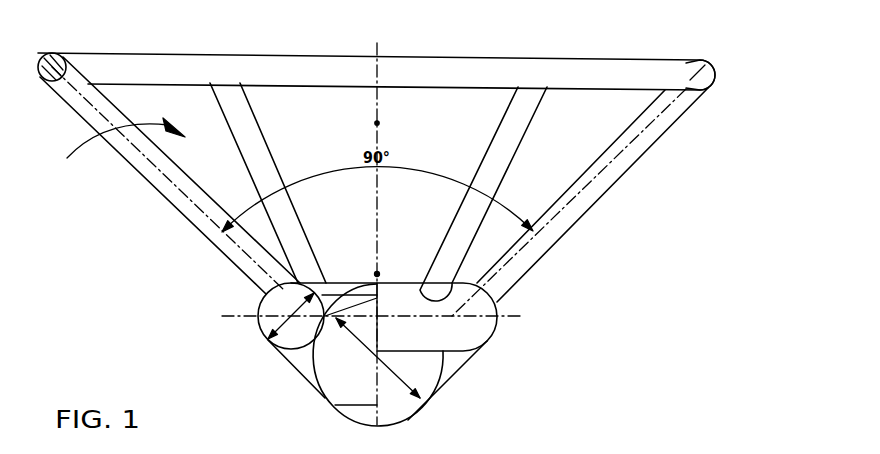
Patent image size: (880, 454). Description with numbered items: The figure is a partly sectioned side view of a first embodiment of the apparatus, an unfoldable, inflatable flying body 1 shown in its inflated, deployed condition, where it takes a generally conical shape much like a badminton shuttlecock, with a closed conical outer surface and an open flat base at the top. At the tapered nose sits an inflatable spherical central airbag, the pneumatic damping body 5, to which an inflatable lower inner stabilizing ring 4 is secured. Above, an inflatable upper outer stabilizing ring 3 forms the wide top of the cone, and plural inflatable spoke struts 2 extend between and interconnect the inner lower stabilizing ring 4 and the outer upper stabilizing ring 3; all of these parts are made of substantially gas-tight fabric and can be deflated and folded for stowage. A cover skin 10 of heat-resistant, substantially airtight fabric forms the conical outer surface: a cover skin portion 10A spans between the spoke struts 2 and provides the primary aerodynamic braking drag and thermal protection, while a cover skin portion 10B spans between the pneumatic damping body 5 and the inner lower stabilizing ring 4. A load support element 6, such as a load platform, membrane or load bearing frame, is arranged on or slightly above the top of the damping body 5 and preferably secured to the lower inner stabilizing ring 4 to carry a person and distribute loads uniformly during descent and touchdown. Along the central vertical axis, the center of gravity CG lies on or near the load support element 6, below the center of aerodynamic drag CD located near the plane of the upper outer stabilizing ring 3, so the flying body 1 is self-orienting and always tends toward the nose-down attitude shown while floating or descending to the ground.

The flying body 1 is at (147, 215).
The spoke struts 2 is at (608, 182).
The upper outer stabilizing ring 3 is at (687, 72).
The lower inner stabilizing ring 4 is at (478, 335).
The pneumatic damping body 5 is at (335, 383).
The load support element 6 is at (332, 283).
The cover skin 10 is at (108, 150).
The cover skin portion 10A is at (422, 102).
The cover skin portion 10B is at (460, 370).
The center of aerodynamic drag CD is at (380, 123).
The center of gravity CG is at (380, 273).